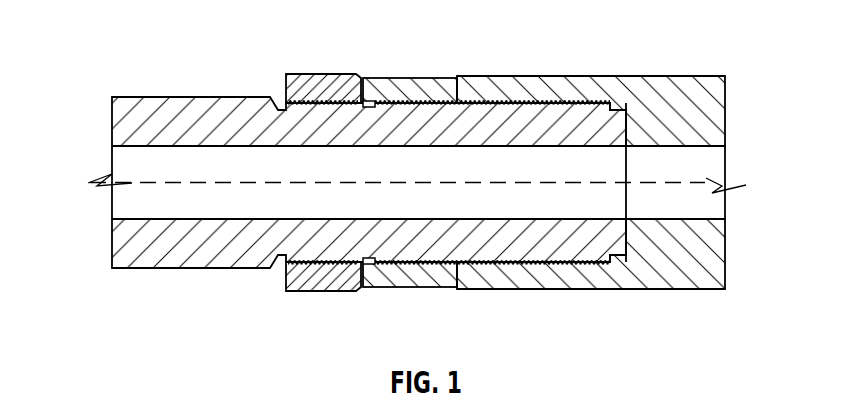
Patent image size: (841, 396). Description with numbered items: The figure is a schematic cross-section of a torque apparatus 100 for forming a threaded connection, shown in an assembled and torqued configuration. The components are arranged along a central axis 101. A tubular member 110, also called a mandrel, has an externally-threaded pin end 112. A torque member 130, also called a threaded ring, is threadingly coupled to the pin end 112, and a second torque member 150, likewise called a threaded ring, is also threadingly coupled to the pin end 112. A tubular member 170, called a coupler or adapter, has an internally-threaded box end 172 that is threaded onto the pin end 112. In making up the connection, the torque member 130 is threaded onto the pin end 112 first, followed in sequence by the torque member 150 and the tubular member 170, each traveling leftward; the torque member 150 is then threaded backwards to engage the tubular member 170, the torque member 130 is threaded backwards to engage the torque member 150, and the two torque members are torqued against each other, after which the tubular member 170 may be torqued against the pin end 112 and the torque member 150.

The torque apparatus 100 is at (142, 27).
The central axis 101 is at (129, 180).
The tubular member 110 is at (181, 103).
The externally-threaded pin end 112 is at (603, 170).
The torque member 130 is at (301, 80).
The torque member 150 is at (398, 86).
The tubular member 170 is at (506, 86).
The internally-threaded box end 172 is at (576, 289).